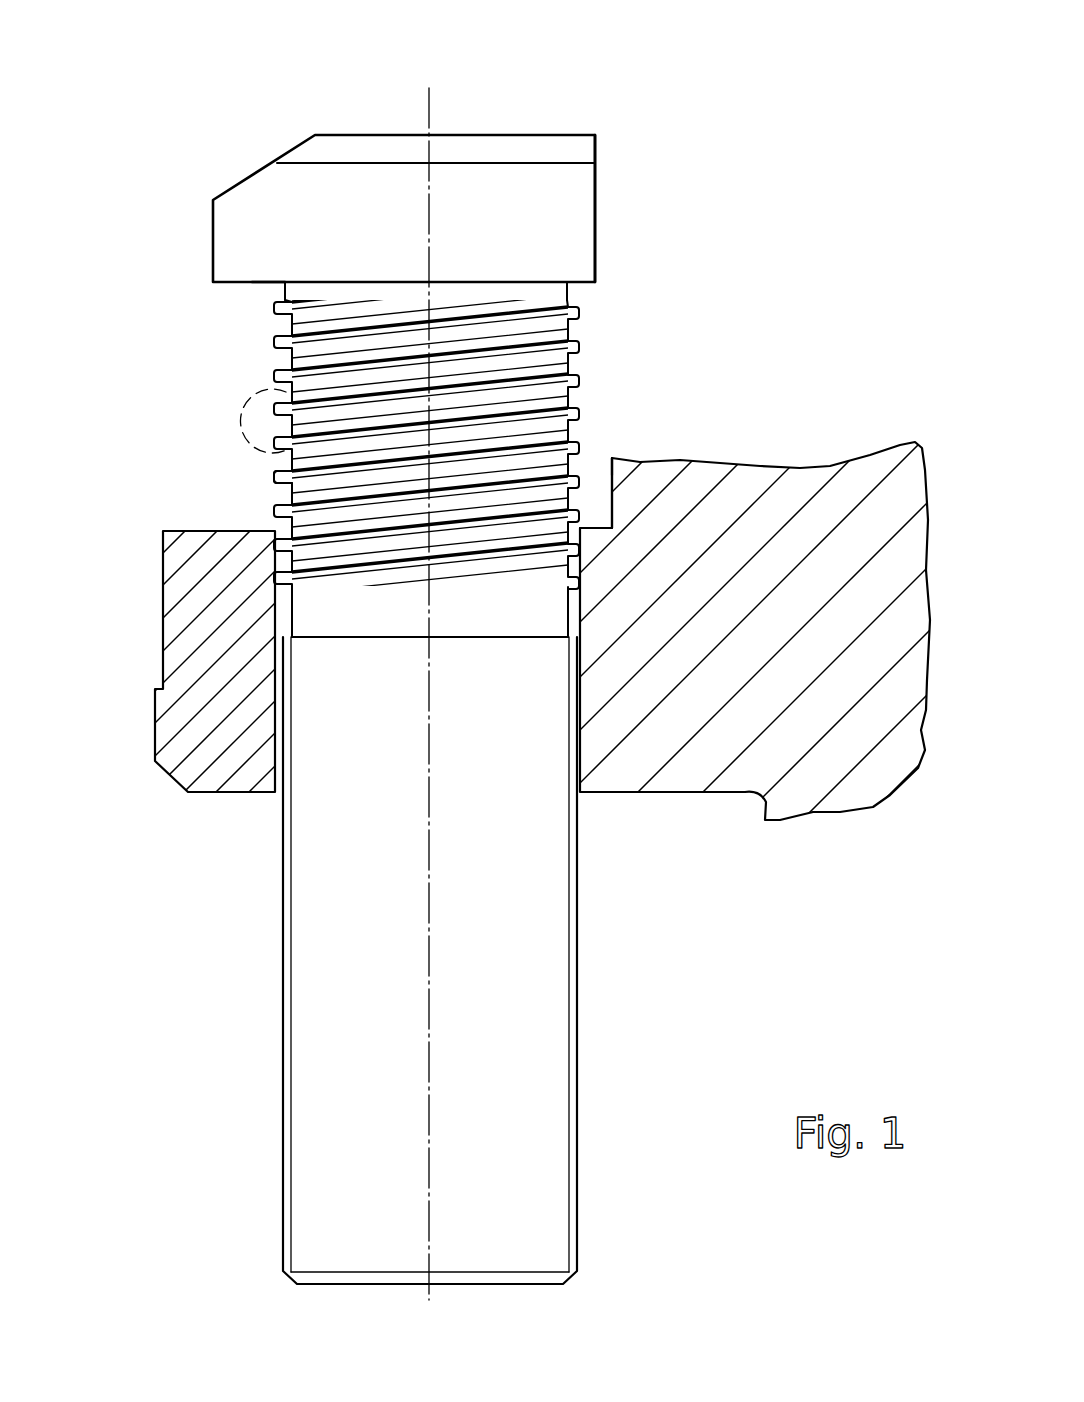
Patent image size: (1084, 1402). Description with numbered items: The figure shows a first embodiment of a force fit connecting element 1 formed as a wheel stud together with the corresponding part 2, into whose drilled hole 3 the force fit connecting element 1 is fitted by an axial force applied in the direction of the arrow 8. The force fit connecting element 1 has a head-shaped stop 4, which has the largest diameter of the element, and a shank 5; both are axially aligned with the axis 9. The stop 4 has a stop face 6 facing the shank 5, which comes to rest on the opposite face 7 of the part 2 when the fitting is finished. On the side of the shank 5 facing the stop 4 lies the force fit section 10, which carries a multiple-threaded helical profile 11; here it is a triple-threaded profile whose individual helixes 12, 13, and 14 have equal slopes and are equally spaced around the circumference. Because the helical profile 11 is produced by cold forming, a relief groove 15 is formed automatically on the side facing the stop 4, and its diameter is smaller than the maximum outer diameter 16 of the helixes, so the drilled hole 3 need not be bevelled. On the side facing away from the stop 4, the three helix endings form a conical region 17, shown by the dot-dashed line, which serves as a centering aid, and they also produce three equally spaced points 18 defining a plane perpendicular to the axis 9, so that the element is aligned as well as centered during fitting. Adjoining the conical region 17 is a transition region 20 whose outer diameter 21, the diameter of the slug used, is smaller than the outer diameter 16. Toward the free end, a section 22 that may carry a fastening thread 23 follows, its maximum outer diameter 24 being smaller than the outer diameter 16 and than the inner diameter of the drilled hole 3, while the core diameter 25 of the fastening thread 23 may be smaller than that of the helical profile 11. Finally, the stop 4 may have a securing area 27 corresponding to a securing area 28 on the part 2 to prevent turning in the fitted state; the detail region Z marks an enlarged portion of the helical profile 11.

The force fit connecting element 1 is at (663, 272).
The corresponding part 2 is at (741, 375).
The drilled hole 3 is at (580, 598).
The stop 4 is at (547, 203).
The shank 5 is at (517, 923).
The stop face 6 is at (177, 311).
The opposite face 7 is at (270, 647).
The arrow 8 is at (427, 20).
The axis 9 is at (432, 1107).
The force fit section 10 is at (610, 558).
The multiple-threaded helical profile 11 is at (252, 341).
The helix 12 is at (333, 305).
The helix 13 is at (363, 370).
The helix 14 is at (408, 400).
The relief groove 15 is at (597, 285).
The maximum outer diameter 16 is at (260, 476).
The conical region 17 is at (654, 449).
The points 18 is at (318, 606).
The transition region 20 is at (320, 640).
The outer diameter 21 is at (300, 596).
The section 22 is at (332, 870).
The fastening thread 23 is at (287, 970).
The maximum outer diameter 24 is at (565, 1043).
The core diameter 25 is at (557, 1089).
The securing area 27 is at (597, 193).
The securing area 28 is at (656, 368).
The detail region Z is at (230, 414).